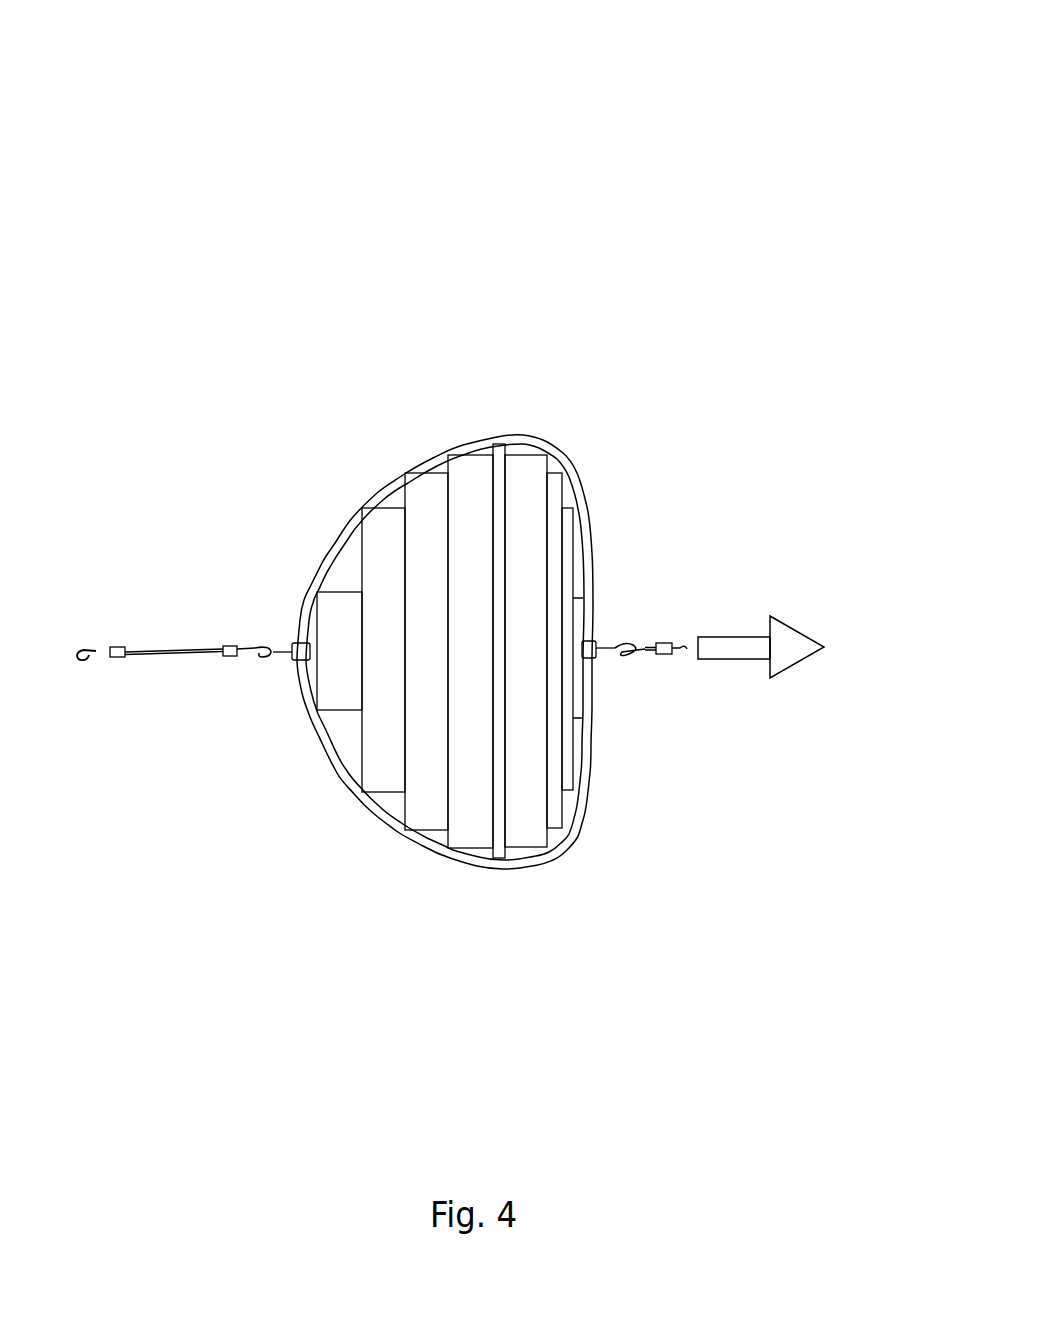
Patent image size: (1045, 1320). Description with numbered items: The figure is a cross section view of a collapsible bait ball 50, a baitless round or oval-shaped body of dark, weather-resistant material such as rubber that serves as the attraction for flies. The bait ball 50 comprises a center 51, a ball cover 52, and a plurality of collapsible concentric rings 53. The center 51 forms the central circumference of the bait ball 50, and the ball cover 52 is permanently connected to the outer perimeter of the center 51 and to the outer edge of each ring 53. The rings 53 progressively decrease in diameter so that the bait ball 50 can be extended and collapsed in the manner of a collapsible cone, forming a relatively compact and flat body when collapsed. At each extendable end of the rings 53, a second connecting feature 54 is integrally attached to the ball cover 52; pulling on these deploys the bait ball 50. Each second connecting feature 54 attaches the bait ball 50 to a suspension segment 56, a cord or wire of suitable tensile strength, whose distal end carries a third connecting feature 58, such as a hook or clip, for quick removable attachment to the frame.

The bait ball 50 is at (121, 126).
The center 51 is at (498, 448).
The ball cover 52 is at (422, 465).
The collapsible concentric rings 53 is at (342, 678).
The second connecting feature 54 is at (292, 658).
The suspension segment 56 is at (202, 648).
The third connecting feature 58 is at (98, 650).